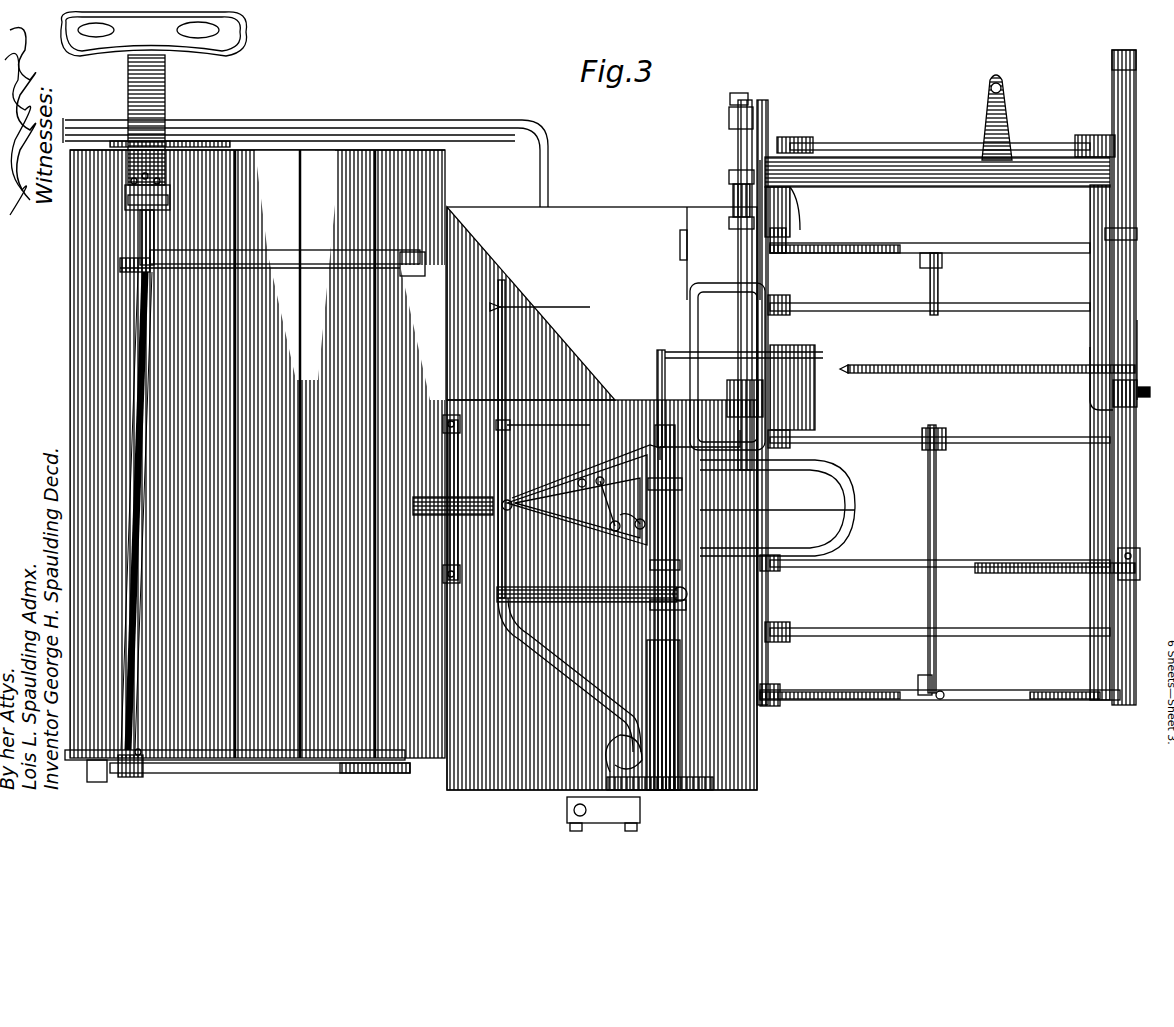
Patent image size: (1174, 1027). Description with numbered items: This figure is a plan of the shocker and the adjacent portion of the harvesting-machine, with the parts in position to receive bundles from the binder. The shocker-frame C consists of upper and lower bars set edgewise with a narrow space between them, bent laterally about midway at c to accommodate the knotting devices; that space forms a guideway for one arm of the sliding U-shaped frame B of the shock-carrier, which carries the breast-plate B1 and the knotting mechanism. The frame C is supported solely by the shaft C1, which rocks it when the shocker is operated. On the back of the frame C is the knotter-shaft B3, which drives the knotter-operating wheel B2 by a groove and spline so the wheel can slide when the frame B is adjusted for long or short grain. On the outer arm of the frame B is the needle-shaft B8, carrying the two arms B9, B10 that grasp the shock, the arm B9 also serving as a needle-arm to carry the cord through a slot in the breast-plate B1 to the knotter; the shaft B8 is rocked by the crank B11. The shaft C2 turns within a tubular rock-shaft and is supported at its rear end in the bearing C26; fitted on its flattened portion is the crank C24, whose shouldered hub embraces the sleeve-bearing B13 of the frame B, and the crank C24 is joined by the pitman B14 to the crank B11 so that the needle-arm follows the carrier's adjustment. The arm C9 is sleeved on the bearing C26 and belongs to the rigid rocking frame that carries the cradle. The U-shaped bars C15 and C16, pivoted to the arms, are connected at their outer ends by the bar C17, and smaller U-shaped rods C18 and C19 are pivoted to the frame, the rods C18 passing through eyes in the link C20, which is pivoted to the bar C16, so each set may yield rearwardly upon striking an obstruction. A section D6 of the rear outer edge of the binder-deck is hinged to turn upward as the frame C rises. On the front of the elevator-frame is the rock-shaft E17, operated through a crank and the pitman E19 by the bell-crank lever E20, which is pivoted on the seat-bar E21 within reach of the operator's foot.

The sliding U-shaped frame B is at (845, 172).
The breast-plate B1 is at (815, 400).
The knotter-operating wheel B2 is at (728, 393).
The knotter-shaft B3 is at (742, 308).
The needle-shaft B8 is at (1137, 236).
The needle-arm B9 is at (982, 367).
The arm B10 is at (1015, 574).
The crank B11 is at (1116, 148).
The sleeve-bearing B13 is at (733, 190).
The pitman B14 is at (922, 146).
The shocker-frame C is at (765, 160).
The shaft C1 is at (1137, 320).
The shaft C2 is at (732, 142).
The arm C9 is at (733, 98).
The U-shaped bar C15 is at (975, 251).
The U-shaped bar C16 is at (975, 702).
The bar C17 is at (1118, 102).
The U-shaped rods C18 is at (1012, 444).
The U-shaped rod C19 is at (977, 307).
The link C20 is at (940, 283).
The crank C24 is at (772, 160).
The bearing C26 is at (730, 120).
The lateral bend c is at (690, 313).
The hinged deck section D6 is at (690, 214).
The rock-shaft E17 is at (233, 773).
The pitman E19 is at (137, 423).
The bell-crank lever E20 is at (150, 201).
The seat-bar E21 is at (132, 327).